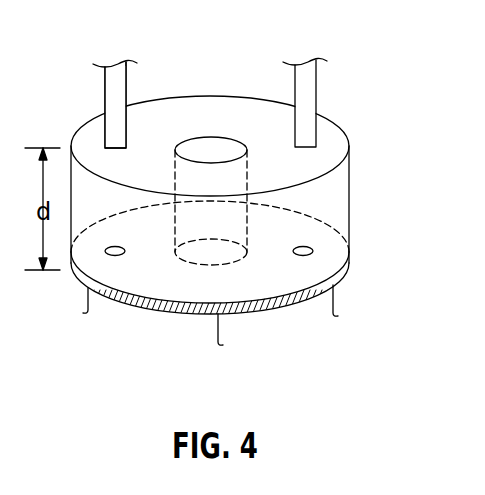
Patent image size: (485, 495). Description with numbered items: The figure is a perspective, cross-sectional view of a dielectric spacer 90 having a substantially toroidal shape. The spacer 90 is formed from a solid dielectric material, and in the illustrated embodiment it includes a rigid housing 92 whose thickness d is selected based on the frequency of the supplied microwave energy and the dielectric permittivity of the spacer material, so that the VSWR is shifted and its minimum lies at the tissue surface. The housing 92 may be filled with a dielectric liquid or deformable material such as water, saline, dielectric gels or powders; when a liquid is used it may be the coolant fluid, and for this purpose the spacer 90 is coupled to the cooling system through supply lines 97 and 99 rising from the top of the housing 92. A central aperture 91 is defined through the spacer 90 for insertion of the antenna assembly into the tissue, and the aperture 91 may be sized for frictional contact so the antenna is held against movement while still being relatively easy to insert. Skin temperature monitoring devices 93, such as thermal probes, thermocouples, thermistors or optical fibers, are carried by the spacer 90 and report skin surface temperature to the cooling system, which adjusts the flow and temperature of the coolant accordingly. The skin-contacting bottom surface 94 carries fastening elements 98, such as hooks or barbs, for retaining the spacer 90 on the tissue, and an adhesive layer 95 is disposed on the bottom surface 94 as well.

The dielectric spacer 90 is at (348, 128).
The aperture 91 is at (213, 137).
The rigid housing 92 is at (349, 187).
The skin temperature monitoring devices 93 is at (105, 251).
The skin-contacting bottom surface 94 is at (330, 272).
The adhesive layer 95 is at (268, 313).
The supply line 97 is at (105, 88).
The fastening elements 98 is at (92, 308).
The supply line 99 is at (316, 88).